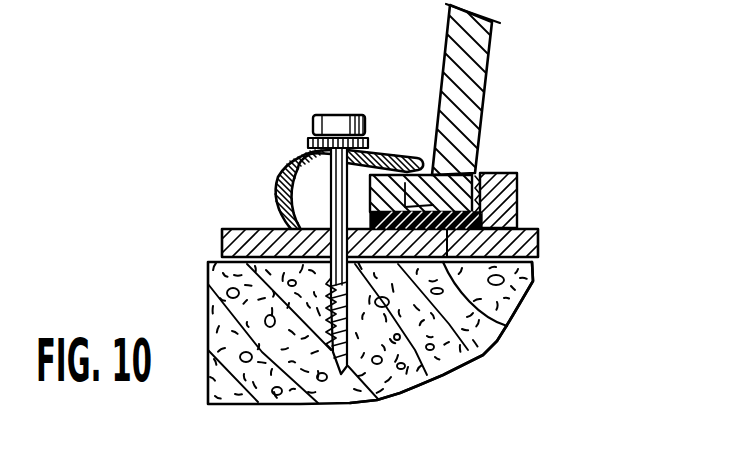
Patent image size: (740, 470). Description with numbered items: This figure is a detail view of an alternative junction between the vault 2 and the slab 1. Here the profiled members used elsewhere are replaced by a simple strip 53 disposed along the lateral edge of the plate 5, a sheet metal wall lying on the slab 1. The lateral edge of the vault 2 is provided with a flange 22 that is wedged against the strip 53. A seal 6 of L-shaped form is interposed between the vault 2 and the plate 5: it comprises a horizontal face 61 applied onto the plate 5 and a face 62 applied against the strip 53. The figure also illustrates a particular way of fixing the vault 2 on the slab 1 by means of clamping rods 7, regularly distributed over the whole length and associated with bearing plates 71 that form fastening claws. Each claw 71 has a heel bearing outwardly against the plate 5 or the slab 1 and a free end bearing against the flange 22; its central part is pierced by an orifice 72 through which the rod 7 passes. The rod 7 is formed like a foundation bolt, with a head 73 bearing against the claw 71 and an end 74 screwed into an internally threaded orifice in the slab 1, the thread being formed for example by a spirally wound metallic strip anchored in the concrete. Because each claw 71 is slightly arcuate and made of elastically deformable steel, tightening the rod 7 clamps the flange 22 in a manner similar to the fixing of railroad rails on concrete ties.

The slab 1 is at (363, 318).
The vault 2 is at (442, 69).
The plate 5 is at (526, 222).
The seal 6 is at (475, 148).
The clamping rod 7 is at (290, 176).
The flange 22 is at (445, 375).
The strip 53 is at (505, 198).
The horizontal face 61 is at (507, 327).
The face 62 is at (477, 176).
The bearing plate 71 is at (285, 171).
The orifice 72 is at (297, 150).
The head 73 is at (366, 126).
The end 74 is at (250, 313).